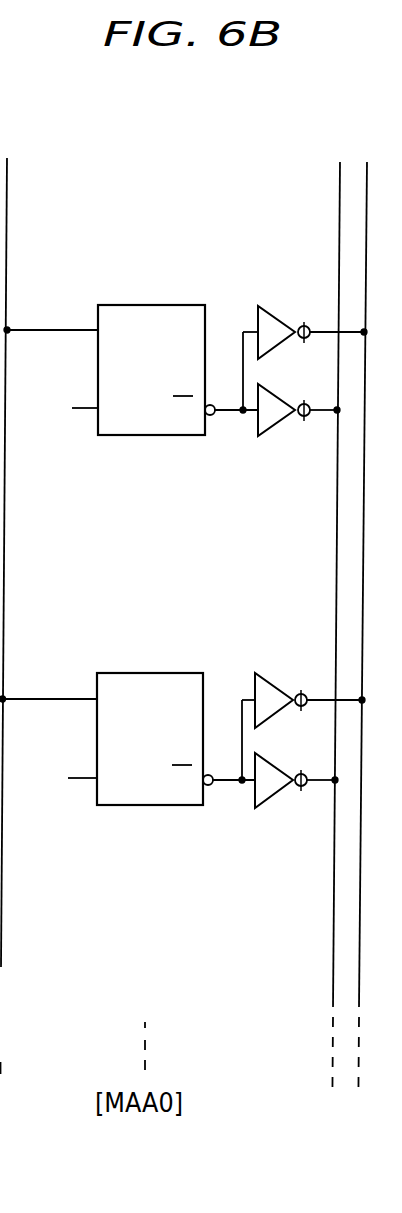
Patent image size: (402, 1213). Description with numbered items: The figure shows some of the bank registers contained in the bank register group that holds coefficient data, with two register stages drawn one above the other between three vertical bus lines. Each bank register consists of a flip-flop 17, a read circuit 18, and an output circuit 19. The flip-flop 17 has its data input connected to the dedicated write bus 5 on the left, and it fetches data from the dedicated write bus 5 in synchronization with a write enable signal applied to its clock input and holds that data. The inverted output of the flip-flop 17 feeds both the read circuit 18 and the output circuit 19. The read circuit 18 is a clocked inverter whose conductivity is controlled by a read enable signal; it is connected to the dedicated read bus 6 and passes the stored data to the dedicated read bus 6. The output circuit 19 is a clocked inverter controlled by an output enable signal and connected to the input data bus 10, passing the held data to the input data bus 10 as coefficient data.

The dedicated write bus 5 is at (7, 192).
The dedicated read bus 6 is at (367, 172).
The input data bus 10 is at (340, 188).
The flip-flop 17 is at (115, 305).
The read circuit 18 is at (258, 312).
The output circuit 19 is at (272, 436).